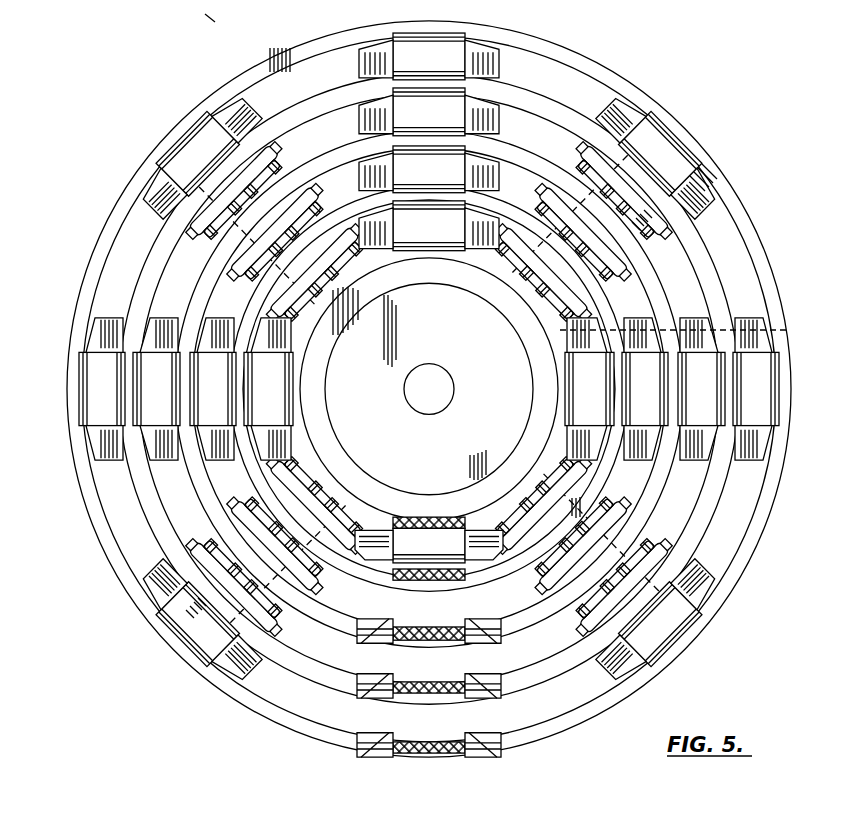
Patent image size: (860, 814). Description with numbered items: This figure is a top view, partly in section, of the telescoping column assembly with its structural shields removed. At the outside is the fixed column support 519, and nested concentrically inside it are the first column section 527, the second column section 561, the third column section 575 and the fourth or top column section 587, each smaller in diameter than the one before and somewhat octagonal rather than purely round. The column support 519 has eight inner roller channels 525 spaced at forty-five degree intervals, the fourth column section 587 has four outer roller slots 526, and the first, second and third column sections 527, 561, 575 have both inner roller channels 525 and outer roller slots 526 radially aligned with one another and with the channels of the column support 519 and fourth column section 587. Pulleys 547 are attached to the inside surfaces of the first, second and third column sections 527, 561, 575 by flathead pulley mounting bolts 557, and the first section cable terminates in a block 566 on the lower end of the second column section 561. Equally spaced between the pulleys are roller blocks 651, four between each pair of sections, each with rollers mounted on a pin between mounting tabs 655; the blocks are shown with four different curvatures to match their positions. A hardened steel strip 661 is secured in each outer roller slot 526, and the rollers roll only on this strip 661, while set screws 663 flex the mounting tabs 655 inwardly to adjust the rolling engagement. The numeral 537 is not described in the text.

The column support 519 is at (667, 127).
The inner roller channels 525 is at (437, 625).
The outer roller slots 526 is at (457, 584).
The first column section 527 is at (546, 104).
The outer housing ring 537 is at (368, 753).
The pulleys 547 is at (552, 192).
The pulley mounting bolts 557 is at (660, 225).
The second column section 561 is at (534, 156).
The block 566 is at (497, 628).
The third column section 575 is at (338, 216).
The fourth column section 587 is at (543, 338).
The roller blocks 651 is at (440, 46).
The mounting tabs 655 is at (212, 4).
The strip 661 is at (684, 342).
The set screws 663 is at (772, 326).